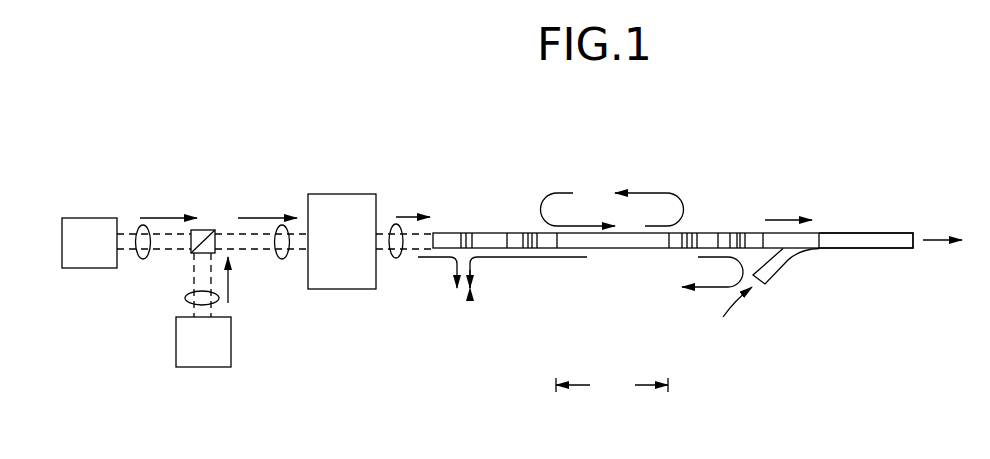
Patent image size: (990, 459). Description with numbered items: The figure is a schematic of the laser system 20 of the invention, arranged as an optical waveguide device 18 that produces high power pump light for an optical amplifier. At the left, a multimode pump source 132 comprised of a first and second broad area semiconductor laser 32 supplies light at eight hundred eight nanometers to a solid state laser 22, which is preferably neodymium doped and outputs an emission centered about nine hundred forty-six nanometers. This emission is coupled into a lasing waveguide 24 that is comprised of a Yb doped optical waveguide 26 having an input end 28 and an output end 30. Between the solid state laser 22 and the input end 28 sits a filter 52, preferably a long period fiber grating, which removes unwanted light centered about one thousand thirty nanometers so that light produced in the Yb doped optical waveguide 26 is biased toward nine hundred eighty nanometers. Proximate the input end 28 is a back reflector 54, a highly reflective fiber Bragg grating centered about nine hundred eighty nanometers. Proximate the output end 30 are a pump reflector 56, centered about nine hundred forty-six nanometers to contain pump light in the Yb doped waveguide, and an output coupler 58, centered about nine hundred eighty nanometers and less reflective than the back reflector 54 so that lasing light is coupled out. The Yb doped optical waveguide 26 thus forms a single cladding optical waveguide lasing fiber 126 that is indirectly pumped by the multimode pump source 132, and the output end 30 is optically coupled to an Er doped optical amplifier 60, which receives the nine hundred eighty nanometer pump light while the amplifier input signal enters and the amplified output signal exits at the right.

The optical waveguide device 18 is at (822, 83).
The laser system 20 is at (411, 113).
The solid state laser 22 is at (347, 182).
The lasing waveguide 24 is at (590, 148).
The Yb doped optical waveguide 26 is at (609, 253).
The input end 28 is at (557, 270).
The output end 30 is at (667, 252).
The broad area semiconductor laser 32 is at (101, 251).
The filter 52 is at (470, 222).
The back reflector 54 is at (528, 205).
The pump reflector 56 is at (693, 225).
The output coupler 58 is at (734, 220).
The Er doped optical amplifier 60 is at (884, 222).
The single cladding optical waveguide lasing fiber 126 is at (638, 148).
The multimode pump source 132 is at (138, 312).